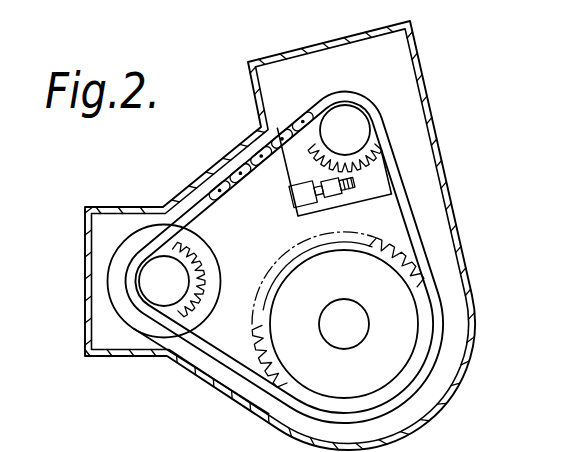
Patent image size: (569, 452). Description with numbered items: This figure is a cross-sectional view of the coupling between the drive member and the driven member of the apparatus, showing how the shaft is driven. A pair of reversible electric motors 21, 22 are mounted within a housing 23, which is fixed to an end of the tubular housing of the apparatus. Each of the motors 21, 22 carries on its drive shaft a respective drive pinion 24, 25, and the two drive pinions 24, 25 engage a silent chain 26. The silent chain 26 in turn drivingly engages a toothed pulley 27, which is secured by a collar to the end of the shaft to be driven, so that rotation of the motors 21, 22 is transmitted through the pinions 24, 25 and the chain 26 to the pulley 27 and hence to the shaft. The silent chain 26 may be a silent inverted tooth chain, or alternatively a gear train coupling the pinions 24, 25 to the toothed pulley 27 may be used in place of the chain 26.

The reversible electric motor 21 is at (408, 105).
The reversible electric motor 22 is at (110, 269).
The housing 23 is at (470, 298).
The drive pinion 24 is at (267, 152).
The drive pinion 25 is at (206, 258).
The silent chain 26 is at (408, 218).
The toothed pulley 27 is at (355, 384).